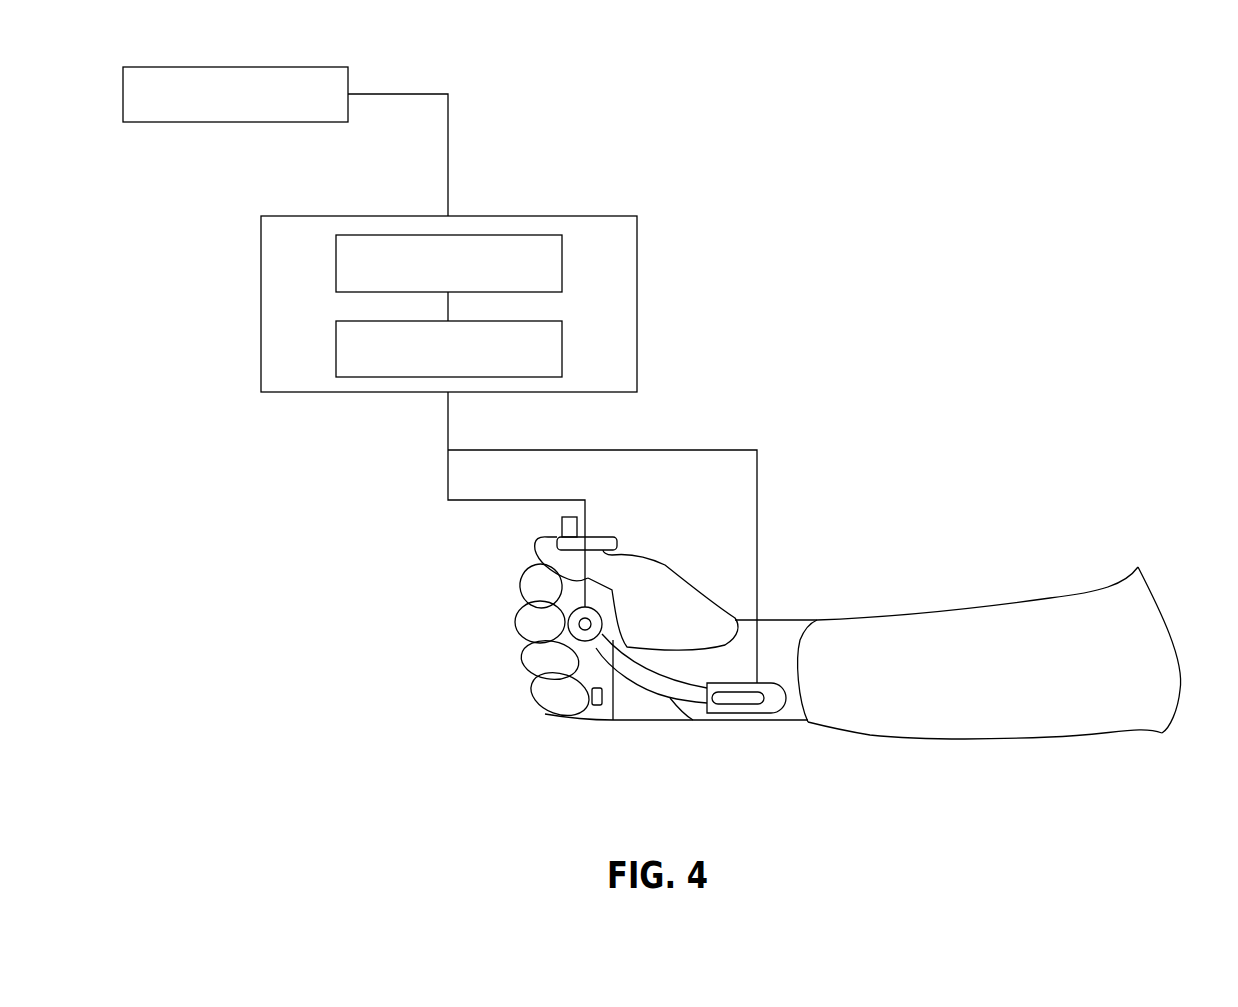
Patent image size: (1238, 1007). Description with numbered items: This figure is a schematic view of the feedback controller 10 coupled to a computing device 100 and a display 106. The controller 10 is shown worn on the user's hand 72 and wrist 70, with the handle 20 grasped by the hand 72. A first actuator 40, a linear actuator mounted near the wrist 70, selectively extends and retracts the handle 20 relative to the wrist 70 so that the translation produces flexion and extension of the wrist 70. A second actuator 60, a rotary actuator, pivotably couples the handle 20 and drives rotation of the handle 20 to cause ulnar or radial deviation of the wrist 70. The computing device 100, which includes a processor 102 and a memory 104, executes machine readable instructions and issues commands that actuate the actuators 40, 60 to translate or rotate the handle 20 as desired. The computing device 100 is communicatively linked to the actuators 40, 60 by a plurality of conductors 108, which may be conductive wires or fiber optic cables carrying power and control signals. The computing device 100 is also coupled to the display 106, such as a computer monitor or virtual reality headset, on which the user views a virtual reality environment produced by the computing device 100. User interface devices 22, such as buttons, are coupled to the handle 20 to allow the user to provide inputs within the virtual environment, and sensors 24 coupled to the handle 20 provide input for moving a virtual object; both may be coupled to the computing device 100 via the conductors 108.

The feedback controller 10 is at (627, 740).
The handle 20 is at (608, 538).
The user interface devices 22 is at (561, 521).
The sensors 24 is at (603, 713).
The first actuator 40 is at (775, 714).
The second actuator 60 is at (577, 626).
The wrist 70 is at (790, 612).
The hand 72 is at (698, 586).
The computing device 100 is at (607, 216).
The processor 102 is at (562, 253).
The memory 104 is at (562, 338).
The display 106 is at (226, 66).
The conductors 108 is at (448, 476).